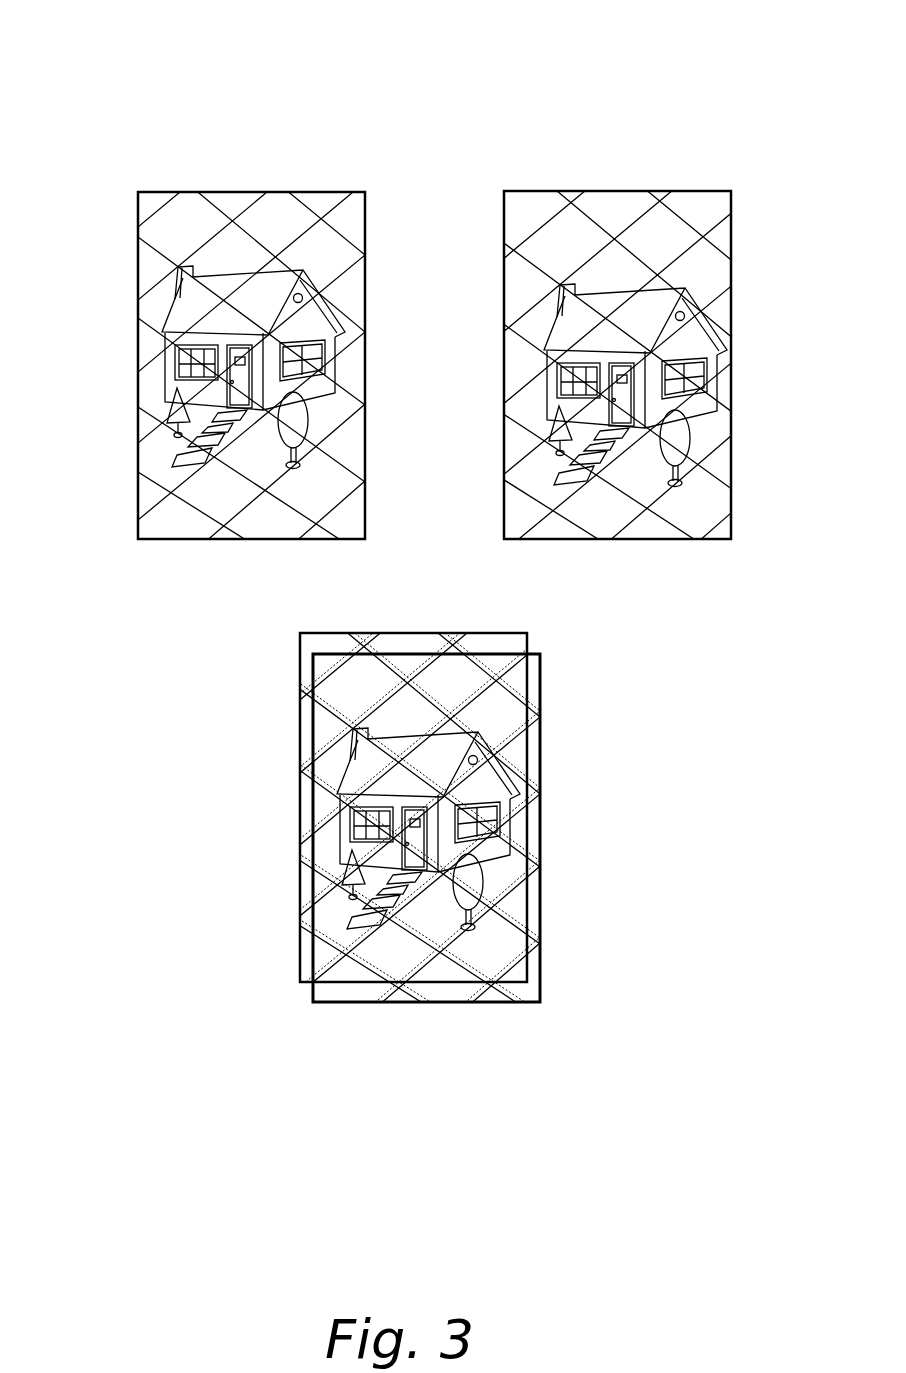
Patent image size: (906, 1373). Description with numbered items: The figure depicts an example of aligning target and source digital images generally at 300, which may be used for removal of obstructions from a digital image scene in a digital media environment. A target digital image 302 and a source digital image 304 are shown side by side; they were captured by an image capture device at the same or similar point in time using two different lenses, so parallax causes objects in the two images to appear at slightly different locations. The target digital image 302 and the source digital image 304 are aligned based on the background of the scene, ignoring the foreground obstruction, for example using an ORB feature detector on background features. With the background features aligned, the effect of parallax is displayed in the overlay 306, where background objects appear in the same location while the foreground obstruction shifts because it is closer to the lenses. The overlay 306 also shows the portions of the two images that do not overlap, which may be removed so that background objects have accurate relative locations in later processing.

The example of aligning target and source digital images 300 is at (150, 62).
The target digital image 302 is at (152, 170).
The source digital image 304 is at (721, 170).
The overlay 306 is at (342, 1032).